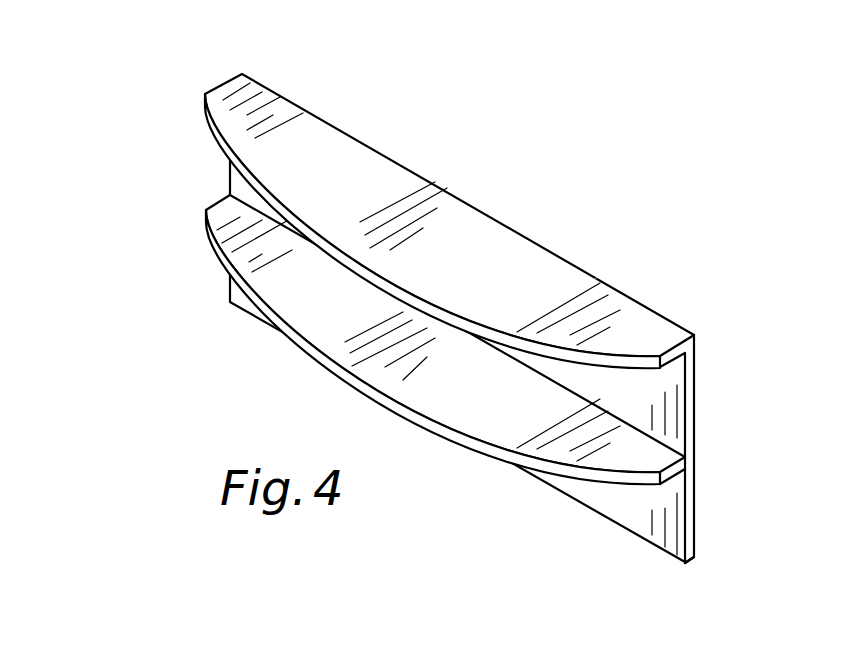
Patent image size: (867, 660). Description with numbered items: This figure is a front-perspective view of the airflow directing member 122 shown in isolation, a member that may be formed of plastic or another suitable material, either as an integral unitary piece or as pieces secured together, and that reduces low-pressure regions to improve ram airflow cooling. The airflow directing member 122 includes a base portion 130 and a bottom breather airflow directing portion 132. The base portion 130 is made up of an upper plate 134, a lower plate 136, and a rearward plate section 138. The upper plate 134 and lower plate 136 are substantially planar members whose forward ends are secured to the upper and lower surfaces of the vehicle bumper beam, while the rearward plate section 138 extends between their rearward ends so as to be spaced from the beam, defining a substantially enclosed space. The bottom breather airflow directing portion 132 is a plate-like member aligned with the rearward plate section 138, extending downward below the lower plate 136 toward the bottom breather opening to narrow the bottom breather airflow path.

The airflow directing member 122 is at (576, 181).
The base portion 130 is at (138, 171).
The bottom breather airflow directing portion 132 is at (695, 511).
The upper plate 134 is at (231, 103).
The lower plate 136 is at (309, 303).
The rearward plate section 138 is at (695, 399).